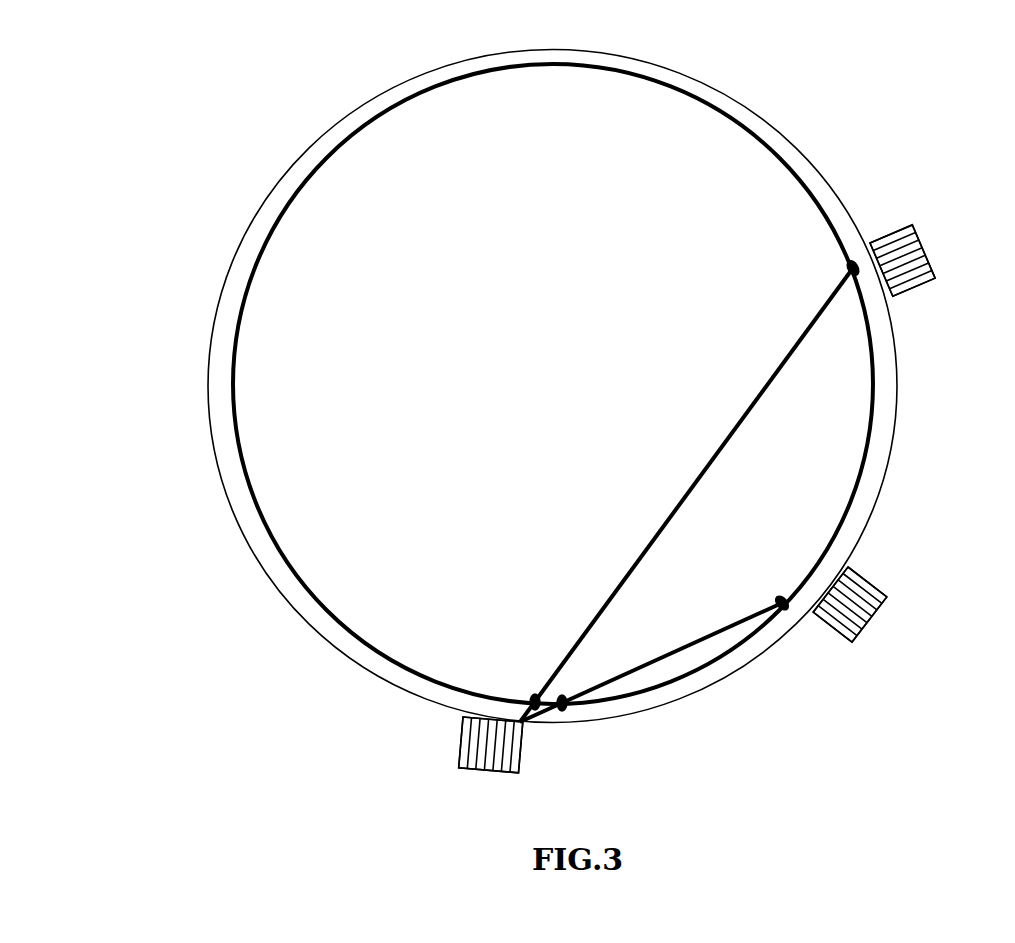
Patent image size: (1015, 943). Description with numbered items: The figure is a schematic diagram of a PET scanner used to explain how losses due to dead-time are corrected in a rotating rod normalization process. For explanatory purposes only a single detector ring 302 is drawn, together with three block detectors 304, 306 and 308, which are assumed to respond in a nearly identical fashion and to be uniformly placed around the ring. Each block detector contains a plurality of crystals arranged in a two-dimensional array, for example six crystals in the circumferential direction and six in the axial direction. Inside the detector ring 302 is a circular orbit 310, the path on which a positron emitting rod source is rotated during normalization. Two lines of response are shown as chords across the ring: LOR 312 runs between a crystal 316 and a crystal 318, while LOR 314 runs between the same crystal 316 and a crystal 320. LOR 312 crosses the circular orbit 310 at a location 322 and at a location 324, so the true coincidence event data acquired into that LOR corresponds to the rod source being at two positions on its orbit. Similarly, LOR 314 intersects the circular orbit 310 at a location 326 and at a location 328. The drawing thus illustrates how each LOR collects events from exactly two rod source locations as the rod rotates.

The detector ring 302 is at (749, 108).
The block detector 304 is at (462, 747).
The block detector 306 is at (877, 567).
The block detector 308 is at (913, 295).
The circular orbit 310 is at (248, 477).
The LOR 312 is at (708, 463).
The LOR 314 is at (695, 643).
The crystal 316 is at (513, 768).
The crystal 318 is at (900, 233).
The crystal 320 is at (872, 615).
The location 322 is at (532, 697).
The location 324 is at (850, 268).
The location 326 is at (564, 705).
The location 328 is at (779, 595).